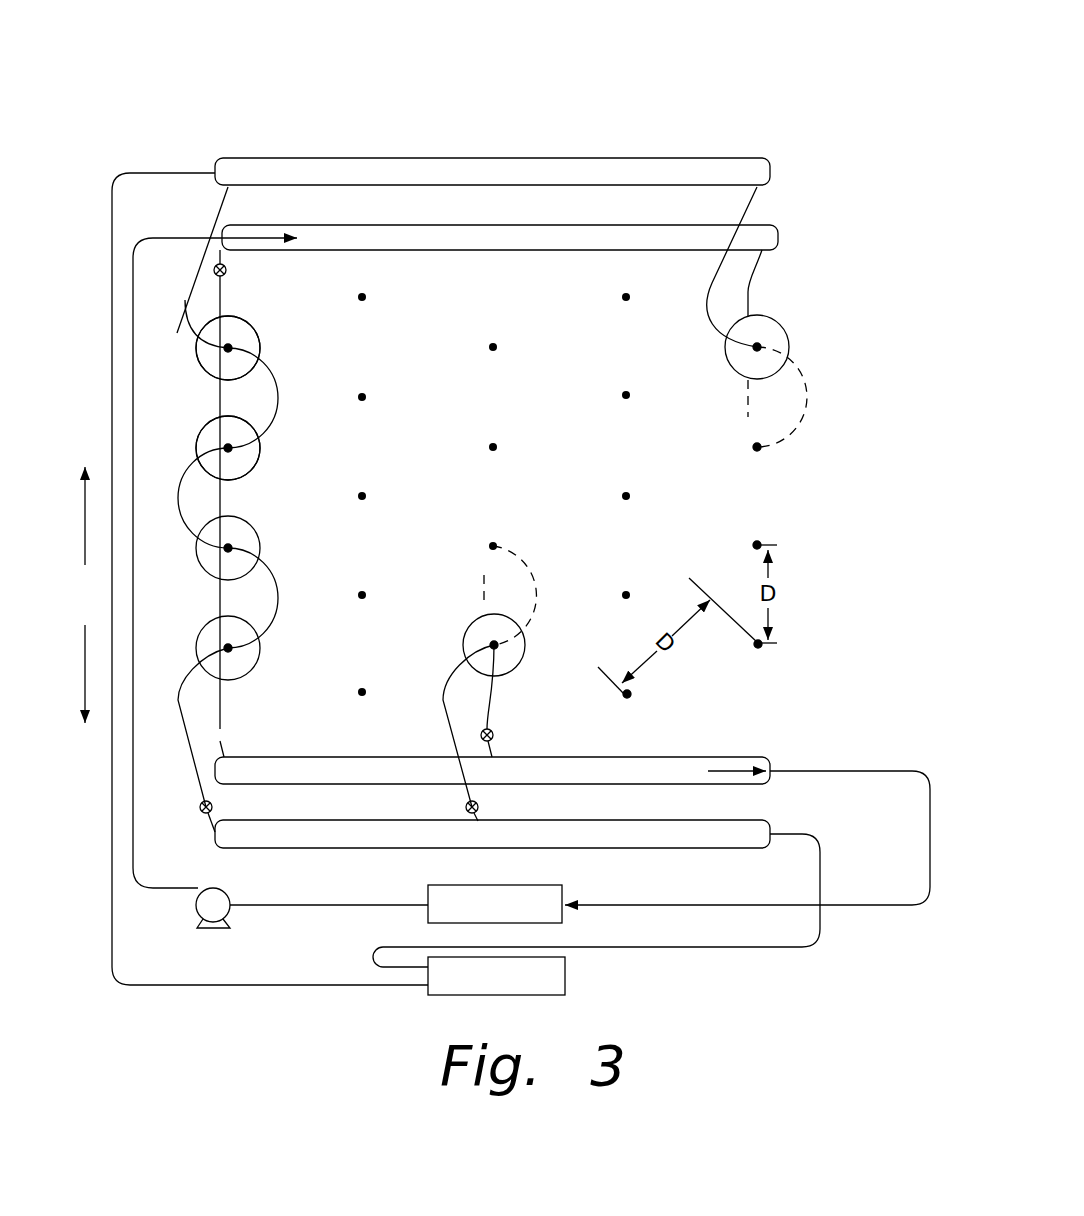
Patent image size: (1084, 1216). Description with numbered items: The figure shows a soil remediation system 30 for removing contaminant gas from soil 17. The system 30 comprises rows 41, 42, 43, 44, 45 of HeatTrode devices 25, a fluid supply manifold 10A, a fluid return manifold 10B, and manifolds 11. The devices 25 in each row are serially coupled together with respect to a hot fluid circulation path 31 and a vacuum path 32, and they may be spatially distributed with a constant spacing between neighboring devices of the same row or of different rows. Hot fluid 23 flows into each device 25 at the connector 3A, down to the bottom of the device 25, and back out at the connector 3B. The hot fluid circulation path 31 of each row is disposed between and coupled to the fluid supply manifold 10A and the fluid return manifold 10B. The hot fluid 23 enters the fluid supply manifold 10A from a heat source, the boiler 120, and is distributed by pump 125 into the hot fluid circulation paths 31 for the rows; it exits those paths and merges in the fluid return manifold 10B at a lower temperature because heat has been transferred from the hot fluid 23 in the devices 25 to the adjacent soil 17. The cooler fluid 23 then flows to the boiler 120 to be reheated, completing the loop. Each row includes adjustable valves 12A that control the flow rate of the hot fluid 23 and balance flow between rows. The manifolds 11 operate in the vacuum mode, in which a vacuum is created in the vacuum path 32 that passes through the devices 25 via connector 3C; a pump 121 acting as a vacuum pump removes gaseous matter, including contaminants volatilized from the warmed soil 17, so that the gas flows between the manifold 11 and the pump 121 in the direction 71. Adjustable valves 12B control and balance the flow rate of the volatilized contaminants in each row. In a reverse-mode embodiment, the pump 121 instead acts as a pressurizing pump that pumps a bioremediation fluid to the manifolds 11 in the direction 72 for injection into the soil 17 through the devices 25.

The connector 3A is at (200, 348).
The connector 3B is at (206, 391).
The connector 3C is at (259, 341).
The fluid supply manifold 10A is at (595, 251).
The fluid return manifold 10B is at (670, 785).
The manifold 11 is at (595, 186).
The adjustable valve 12A is at (227, 269).
The adjustable valve 12B is at (213, 806).
The soil 17 is at (439, 426).
The hot fluid 23 is at (188, 233).
The HeatTrode device 25 is at (245, 315).
The soil remediation system 30 is at (440, 115).
The hot fluid circulation path 31 is at (200, 300).
The vacuum path 32 is at (223, 202).
The row 41 is at (228, 153).
The row 42 is at (363, 153).
The row 43 is at (498, 153).
The row 44 is at (632, 153).
The row 45 is at (767, 153).
The direction 71 is at (85, 680).
The direction 72 is at (85, 510).
The boiler 120 is at (492, 885).
The pump 121 is at (565, 975).
The pump 125 is at (217, 928).